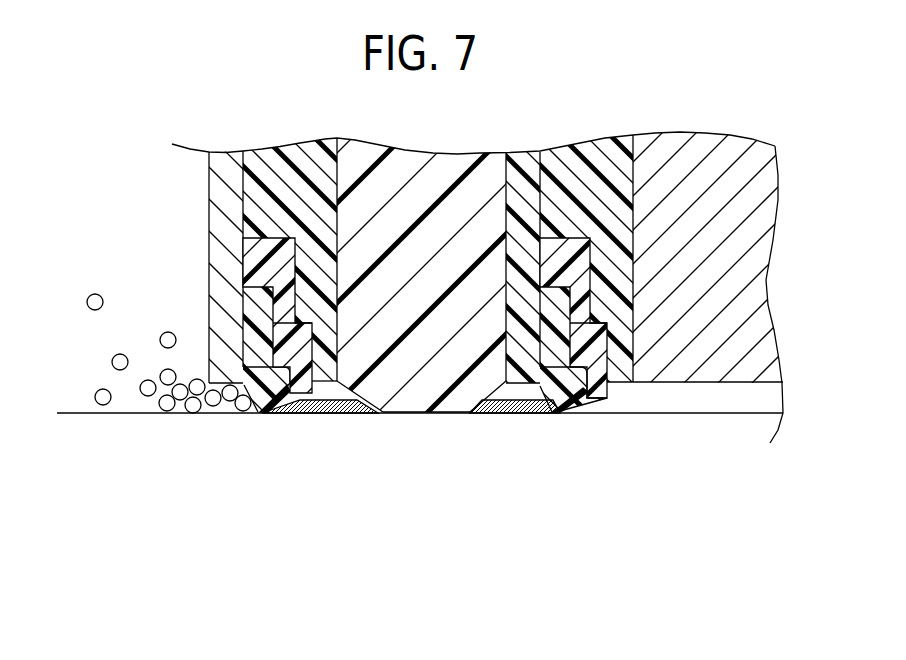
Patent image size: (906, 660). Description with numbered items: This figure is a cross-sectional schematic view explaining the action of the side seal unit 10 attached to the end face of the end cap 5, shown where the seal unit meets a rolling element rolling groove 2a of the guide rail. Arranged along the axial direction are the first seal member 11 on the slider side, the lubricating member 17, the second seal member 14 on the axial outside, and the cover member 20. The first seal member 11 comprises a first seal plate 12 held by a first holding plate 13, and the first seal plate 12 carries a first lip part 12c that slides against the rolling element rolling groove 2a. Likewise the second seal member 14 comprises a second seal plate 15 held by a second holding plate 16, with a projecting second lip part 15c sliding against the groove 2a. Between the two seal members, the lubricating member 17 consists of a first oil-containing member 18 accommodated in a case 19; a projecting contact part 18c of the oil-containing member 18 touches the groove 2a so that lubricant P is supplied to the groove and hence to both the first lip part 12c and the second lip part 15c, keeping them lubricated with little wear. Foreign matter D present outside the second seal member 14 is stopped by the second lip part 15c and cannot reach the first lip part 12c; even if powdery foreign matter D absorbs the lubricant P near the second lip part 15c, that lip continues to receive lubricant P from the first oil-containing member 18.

The rolling element rolling groove 2a is at (75, 413).
The end cap 5 is at (706, 172).
The side seal unit 10 is at (423, 338).
The first seal member 11 is at (592, 305).
The first seal plate 12 is at (592, 363).
The first lip part 12c is at (560, 405).
The first holding plate 13 is at (616, 380).
The second seal member 14 is at (285, 307).
The second seal plate 15 is at (280, 280).
The second lip part 15c is at (263, 410).
The second holding plate 16 is at (318, 378).
The lubricating member 17 is at (415, 340).
The first oil-containing member 18 is at (415, 314).
The contact part 18c is at (407, 408).
The case 19 is at (517, 377).
The cover member 20 is at (221, 376).
The foreign matter D is at (148, 415).
The lubricant P is at (362, 408).